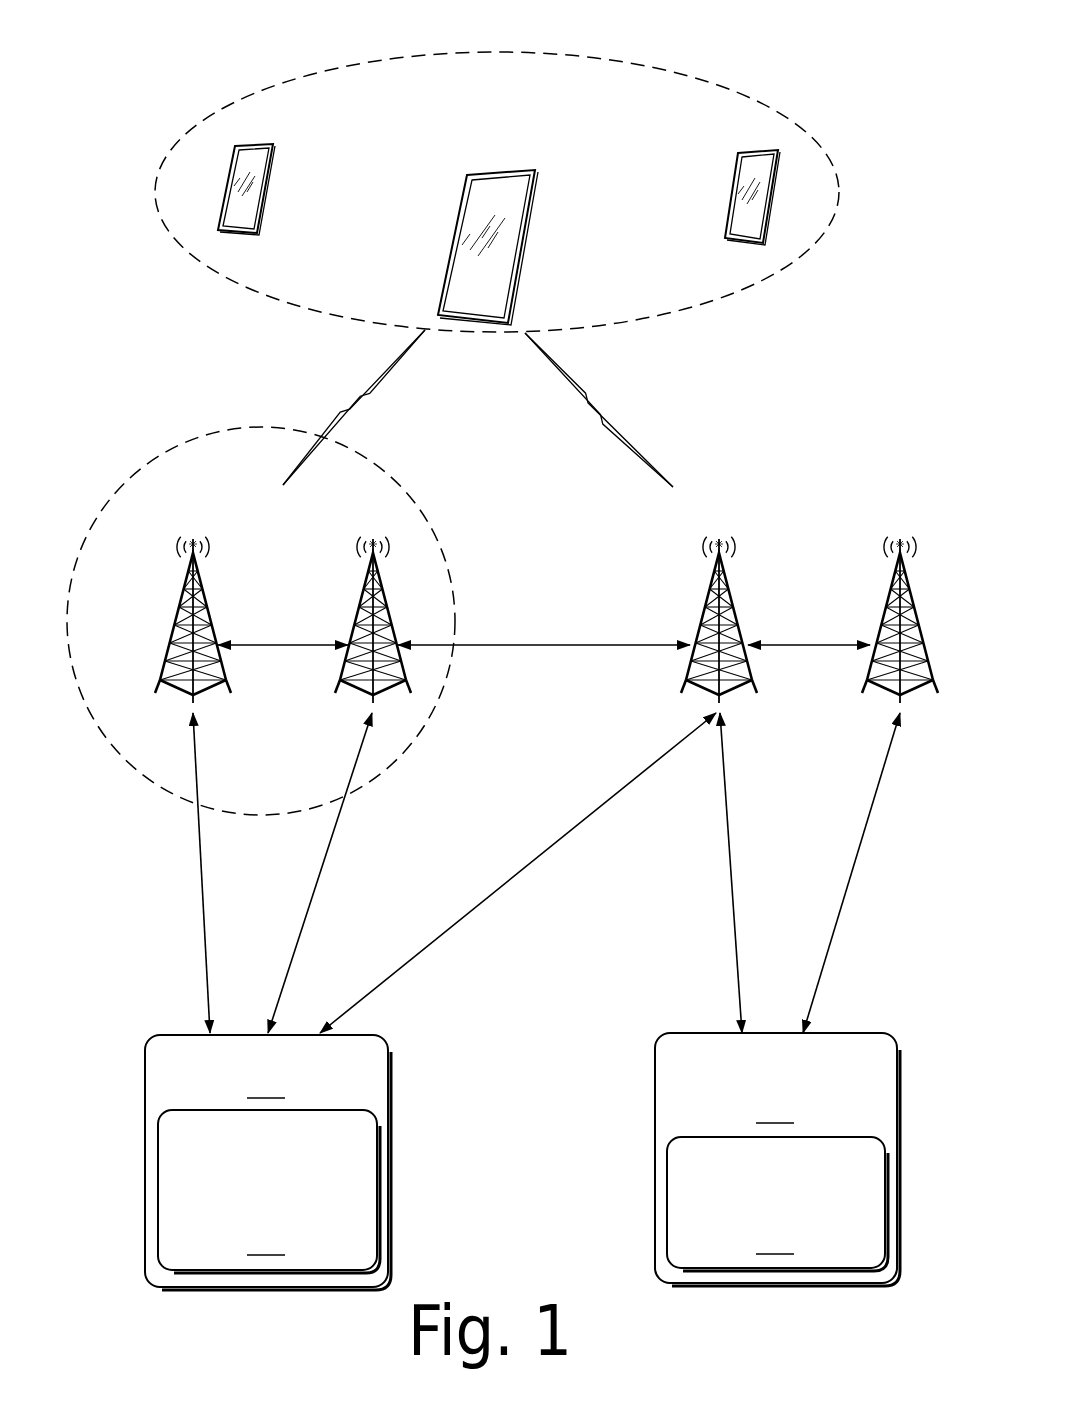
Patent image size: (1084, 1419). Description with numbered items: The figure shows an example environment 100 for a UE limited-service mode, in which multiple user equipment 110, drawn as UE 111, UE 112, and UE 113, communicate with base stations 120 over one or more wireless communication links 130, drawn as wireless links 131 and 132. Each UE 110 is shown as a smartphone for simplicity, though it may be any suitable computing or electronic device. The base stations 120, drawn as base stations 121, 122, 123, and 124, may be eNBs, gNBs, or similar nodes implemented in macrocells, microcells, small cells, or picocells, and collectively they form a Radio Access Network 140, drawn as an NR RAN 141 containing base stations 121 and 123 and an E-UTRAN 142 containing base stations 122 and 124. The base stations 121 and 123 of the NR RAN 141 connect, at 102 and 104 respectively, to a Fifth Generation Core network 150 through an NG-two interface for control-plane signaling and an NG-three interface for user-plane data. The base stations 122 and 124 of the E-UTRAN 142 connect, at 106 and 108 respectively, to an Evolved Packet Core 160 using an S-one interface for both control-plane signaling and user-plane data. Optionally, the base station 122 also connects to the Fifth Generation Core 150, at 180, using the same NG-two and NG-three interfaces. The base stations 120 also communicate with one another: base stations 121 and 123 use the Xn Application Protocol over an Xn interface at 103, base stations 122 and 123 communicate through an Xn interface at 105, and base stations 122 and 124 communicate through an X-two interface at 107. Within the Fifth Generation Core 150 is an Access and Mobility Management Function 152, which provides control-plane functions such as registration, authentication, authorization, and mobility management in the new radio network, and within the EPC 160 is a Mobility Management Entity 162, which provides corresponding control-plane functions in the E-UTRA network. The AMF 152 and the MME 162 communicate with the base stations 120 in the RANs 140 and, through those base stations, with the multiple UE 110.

The environment 100 is at (175, 38).
The user equipment 110 is at (753, 103).
The UE 111 is at (537, 170).
The UE 112 is at (278, 140).
The UE 113 is at (737, 152).
The base stations 120 is at (255, 512).
The base station 121 is at (180, 605).
The base station 122 is at (705, 605).
The base station 123 is at (360, 605).
The base station 124 is at (885, 605).
The wireless communication links 130 is at (603, 364).
The wireless link 131 is at (345, 408).
The wireless link 132 is at (617, 408).
The Radio Access Network 140 is at (520, 448).
The NR RAN 141 is at (418, 488).
The E-UTRAN 142 is at (628, 492).
The connection of base station 121 to the 5GC 102 is at (206, 866).
The Xn interface 103 is at (310, 651).
The connection of base station 123 to the 5GC 104 is at (330, 862).
The Xn interface 105 is at (545, 651).
The connection of base station 122 to the EPC 106 is at (724, 866).
The X2 interface 107 is at (840, 651).
The connection of base station 124 to the EPC 108 is at (846, 866).
The connection of base station 122 to the 5GC 180 is at (495, 900).
The Fifth Generation Core network 150 is at (268, 1162).
The Access and Mobility Management Function 152 is at (269, 1191).
The Evolved Packet Core 160 is at (777, 1159).
The Mobility Management Entity 162 is at (777, 1204).